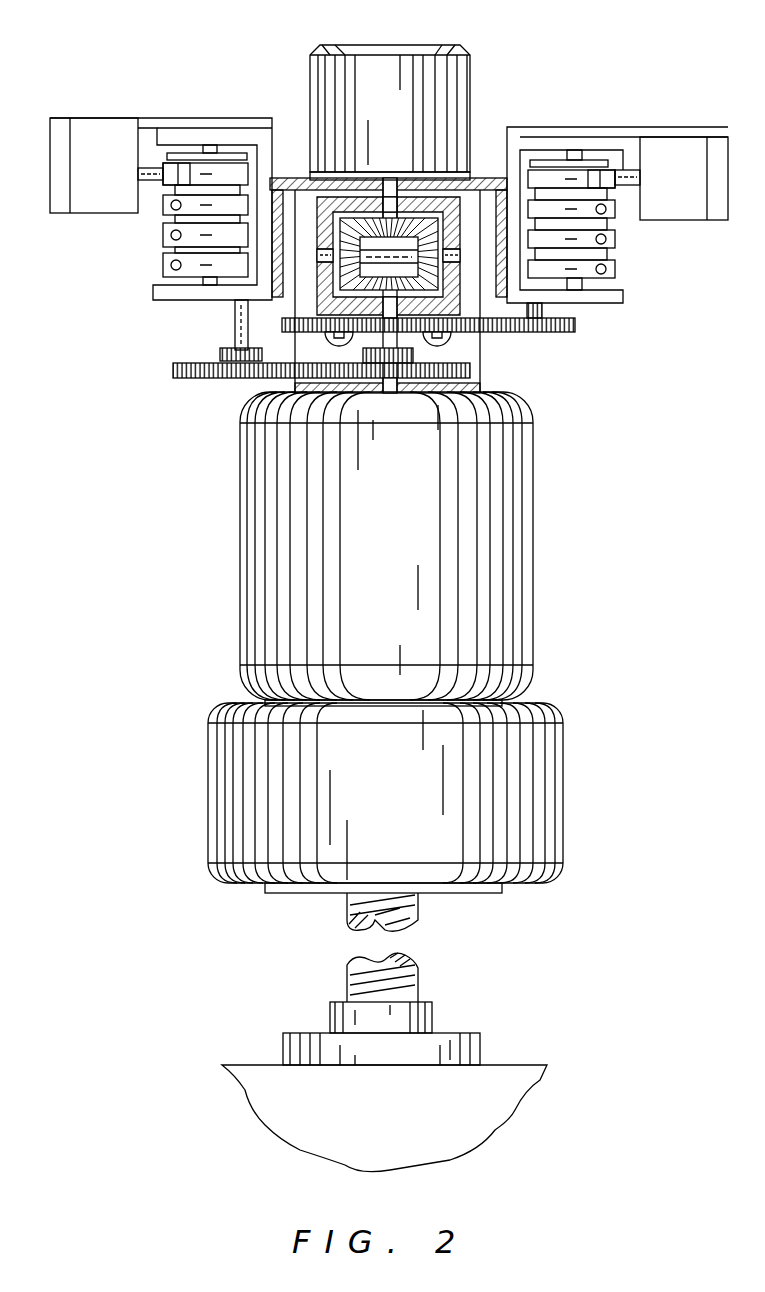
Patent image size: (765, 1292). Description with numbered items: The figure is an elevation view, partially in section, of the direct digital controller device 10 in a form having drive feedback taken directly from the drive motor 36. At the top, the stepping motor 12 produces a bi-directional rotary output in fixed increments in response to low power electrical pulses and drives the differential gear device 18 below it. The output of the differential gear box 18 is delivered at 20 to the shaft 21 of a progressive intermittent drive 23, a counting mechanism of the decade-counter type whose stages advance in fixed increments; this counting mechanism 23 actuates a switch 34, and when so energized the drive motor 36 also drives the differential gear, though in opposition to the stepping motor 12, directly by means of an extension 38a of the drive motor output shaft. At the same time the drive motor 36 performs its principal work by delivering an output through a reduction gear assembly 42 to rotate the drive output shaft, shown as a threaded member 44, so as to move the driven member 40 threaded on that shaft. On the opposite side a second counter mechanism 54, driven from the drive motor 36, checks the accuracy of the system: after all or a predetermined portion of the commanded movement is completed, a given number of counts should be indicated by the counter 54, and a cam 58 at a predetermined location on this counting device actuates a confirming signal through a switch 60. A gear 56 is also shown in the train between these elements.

The direct digital controller device 10 is at (150, 412).
The stepping motor 12 is at (471, 50).
The differential gear device 18 is at (453, 197).
The differential gear box output 20 is at (415, 350).
The shaft 21 is at (540, 310).
The progressive intermittent drive 23 is at (650, 294).
The switch 34 is at (668, 220).
The drive motor 36 is at (535, 565).
The extension of the drive motor output shaft 38a is at (482, 388).
The driven member 40 is at (480, 1033).
The reduction gear assembly 42 is at (563, 808).
The threaded member 44 is at (427, 958).
The second counter mechanism 54 is at (130, 254).
The drive gear 56 is at (172, 363).
The cam 58 is at (160, 182).
The switch 60 is at (50, 213).